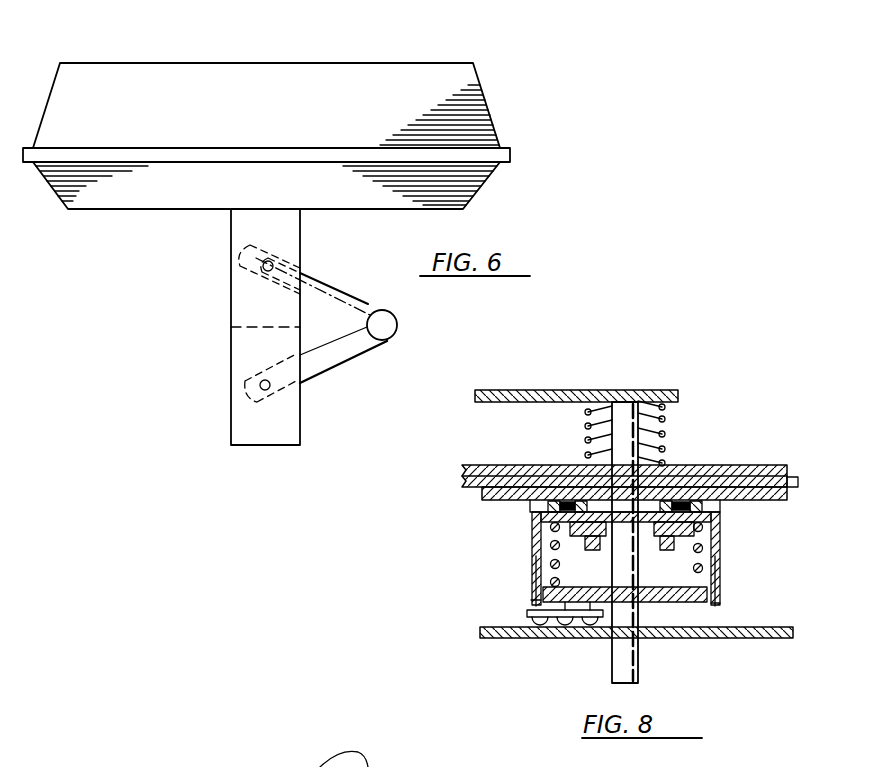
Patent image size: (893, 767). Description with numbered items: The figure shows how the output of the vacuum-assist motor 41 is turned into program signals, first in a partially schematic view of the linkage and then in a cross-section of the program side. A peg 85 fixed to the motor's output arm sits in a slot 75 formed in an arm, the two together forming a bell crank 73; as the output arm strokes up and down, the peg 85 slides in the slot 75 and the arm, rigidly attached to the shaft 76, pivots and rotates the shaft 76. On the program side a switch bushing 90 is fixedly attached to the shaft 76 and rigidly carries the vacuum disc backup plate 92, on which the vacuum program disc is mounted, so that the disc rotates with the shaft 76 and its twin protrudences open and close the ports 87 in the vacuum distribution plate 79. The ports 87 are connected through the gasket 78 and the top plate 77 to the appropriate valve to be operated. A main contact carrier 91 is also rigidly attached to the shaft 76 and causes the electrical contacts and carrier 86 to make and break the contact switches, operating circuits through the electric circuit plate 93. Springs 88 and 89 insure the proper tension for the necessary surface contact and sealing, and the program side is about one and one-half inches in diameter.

In FIG. 6, the vacuum-assist motor 41 is at (270, 60).
In FIG. 6, the slot 75 is at (250, 258).
In FIG. 8, the slot 75 is at (568, 390).
In FIG. 6, the peg 85 is at (272, 262).
In FIG. 6, the shaft 76 is at (388, 340).
In FIG. 8, the shaft 76 is at (622, 660).
In FIG. 6, the bell crank 73 is at (273, 397).
In FIG. 8, the spring 88 is at (668, 419).
In FIG. 8, the top plate 77 is at (520, 465).
In FIG. 8, the ports 87 is at (722, 465).
In FIG. 8, the gasket 78 is at (478, 494).
In FIG. 8, the vacuum distribution plate 79 is at (495, 500).
In FIG. 8, the switch bushing 90 is at (585, 546).
In FIG. 8, the main contact carrier 91 is at (528, 597).
In FIG. 8, the vacuum disc backup plate 92 is at (703, 543).
In FIG. 8, the spring 89 is at (705, 569).
In FIG. 8, the electrical contacts and carrier 86 is at (540, 627).
In FIG. 8, the electric circuit plate 93 is at (735, 638).